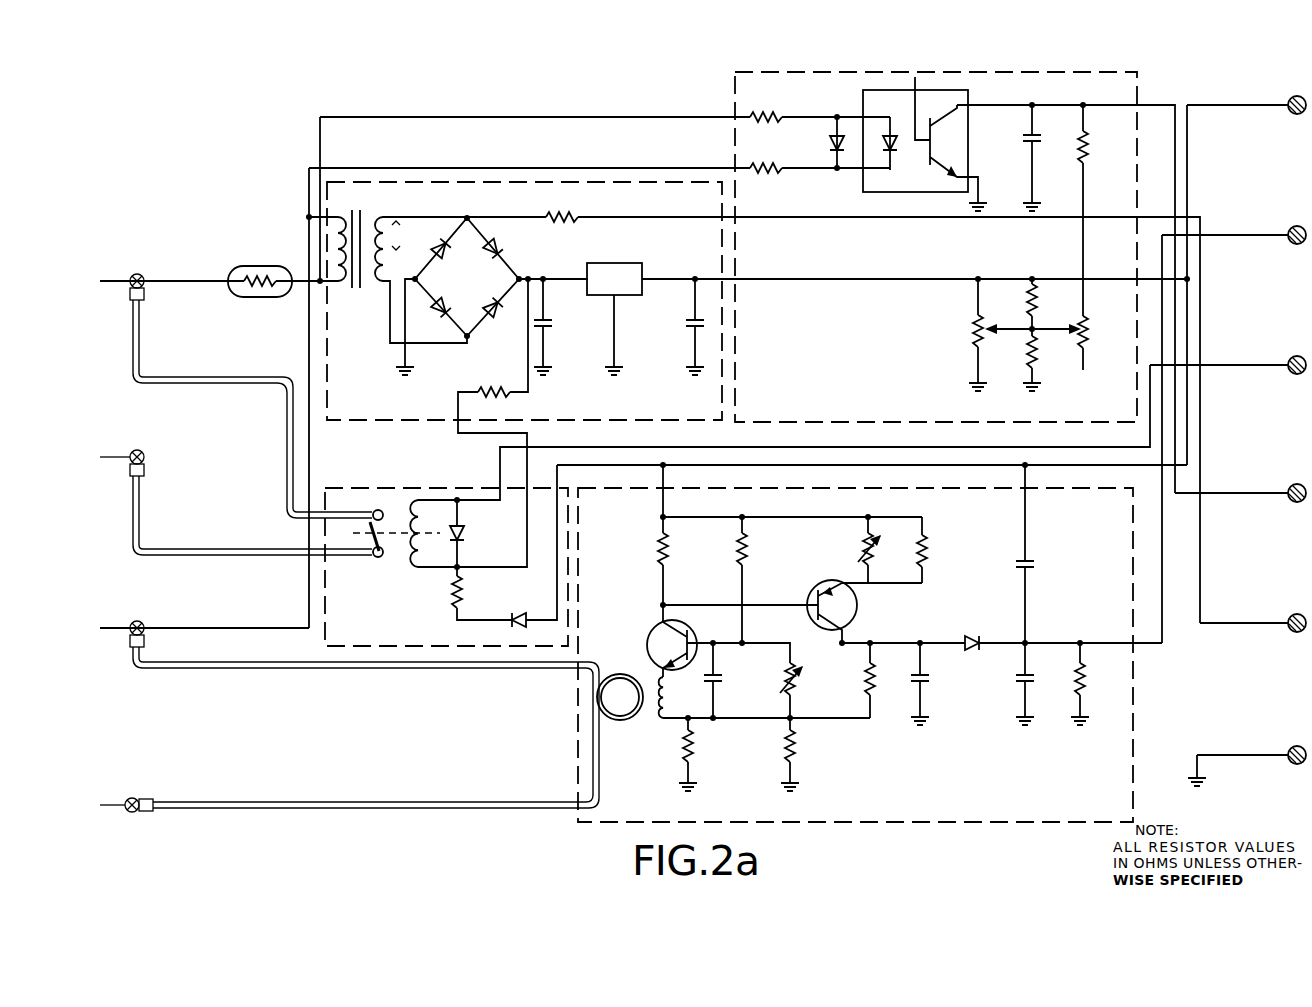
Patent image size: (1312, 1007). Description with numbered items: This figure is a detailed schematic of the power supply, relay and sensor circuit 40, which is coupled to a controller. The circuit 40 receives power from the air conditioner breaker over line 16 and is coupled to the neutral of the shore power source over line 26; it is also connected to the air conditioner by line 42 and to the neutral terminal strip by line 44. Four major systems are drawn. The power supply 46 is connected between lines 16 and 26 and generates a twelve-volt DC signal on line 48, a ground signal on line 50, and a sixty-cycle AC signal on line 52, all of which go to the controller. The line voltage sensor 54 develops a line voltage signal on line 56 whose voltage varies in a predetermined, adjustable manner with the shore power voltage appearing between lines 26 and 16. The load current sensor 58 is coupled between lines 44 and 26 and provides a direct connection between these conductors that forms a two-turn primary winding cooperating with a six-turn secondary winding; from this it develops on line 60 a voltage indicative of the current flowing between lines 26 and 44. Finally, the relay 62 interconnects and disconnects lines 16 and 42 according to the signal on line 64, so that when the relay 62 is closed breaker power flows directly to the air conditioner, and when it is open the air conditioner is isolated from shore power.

The power supply, relay and sensor circuit 40 is at (596, 92).
The line from air conditioner breaker 16 is at (113, 284).
The line to air conditioner 42 is at (111, 460).
The neutral line of shore power source 26 is at (112, 632).
The line to neutral terminal strip 44 is at (117, 811).
The power supply 46 is at (384, 421).
The line voltage sensor 54 is at (733, 93).
The relay 62 is at (325, 644).
The load current sensor 58 is at (1050, 822).
The 12 VDC line 48 is at (1250, 105).
The load current signal line 60 is at (1250, 235).
The relay control signal line 64 is at (1250, 365).
The line voltage signal line 56 is at (1250, 493).
The 60-cycle AC signal line 52 is at (1250, 623).
The ground line 50 is at (1241, 755).